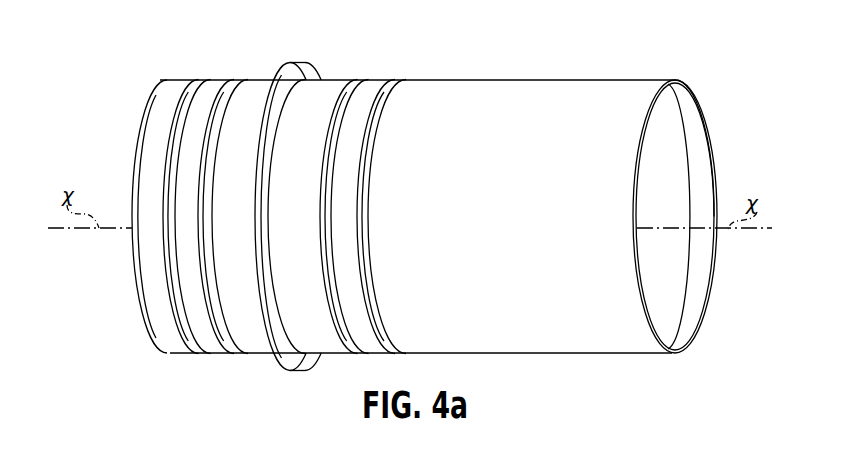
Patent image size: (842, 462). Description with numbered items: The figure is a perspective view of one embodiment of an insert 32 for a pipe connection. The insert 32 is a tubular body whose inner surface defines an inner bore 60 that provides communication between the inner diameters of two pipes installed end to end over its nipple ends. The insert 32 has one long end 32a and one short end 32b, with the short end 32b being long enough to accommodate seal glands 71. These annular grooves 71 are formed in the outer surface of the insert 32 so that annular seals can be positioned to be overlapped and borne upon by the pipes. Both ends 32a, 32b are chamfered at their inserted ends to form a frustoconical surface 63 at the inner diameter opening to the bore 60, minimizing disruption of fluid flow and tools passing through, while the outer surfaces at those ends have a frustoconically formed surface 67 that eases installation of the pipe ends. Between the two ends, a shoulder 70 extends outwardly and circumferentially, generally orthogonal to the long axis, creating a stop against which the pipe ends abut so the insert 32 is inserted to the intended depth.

The insert 32 is at (497, 46).
The long nipple end 32a is at (670, 82).
The short nipple end 32b is at (147, 97).
The inner bore 60 is at (663, 211).
The frustoconical surface 63 is at (688, 117).
The frustoconically formed surface 67 is at (651, 98).
The shoulder 70 is at (301, 64).
The annular grooves 71 is at (194, 88).